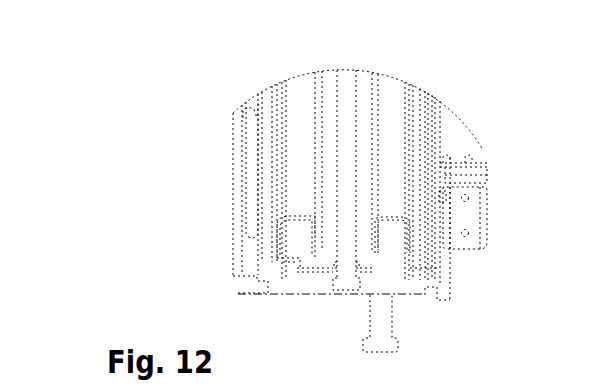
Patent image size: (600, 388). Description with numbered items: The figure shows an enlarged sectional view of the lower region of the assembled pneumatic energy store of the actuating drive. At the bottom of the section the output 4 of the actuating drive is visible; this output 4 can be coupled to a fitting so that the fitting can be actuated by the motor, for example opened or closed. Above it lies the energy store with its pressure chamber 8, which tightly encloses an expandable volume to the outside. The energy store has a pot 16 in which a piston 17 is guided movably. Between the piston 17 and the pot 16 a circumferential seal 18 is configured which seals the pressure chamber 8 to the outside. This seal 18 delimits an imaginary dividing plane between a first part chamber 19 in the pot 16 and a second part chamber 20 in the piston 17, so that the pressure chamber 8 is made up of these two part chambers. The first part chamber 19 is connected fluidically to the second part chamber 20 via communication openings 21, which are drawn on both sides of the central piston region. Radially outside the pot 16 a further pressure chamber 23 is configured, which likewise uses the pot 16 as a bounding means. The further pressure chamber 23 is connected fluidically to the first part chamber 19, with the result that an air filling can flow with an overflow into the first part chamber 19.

The output 4 is at (373, 318).
The pressure chamber 8 is at (187, 212).
The pot 16 is at (277, 104).
The piston 17 is at (282, 108).
The circumferential seal 18 is at (277, 259).
The first part chamber 19 is at (298, 268).
The second part chamber 20 is at (292, 133).
The communication openings 21 is at (308, 250).
The further pressure chamber 23 is at (280, 200).